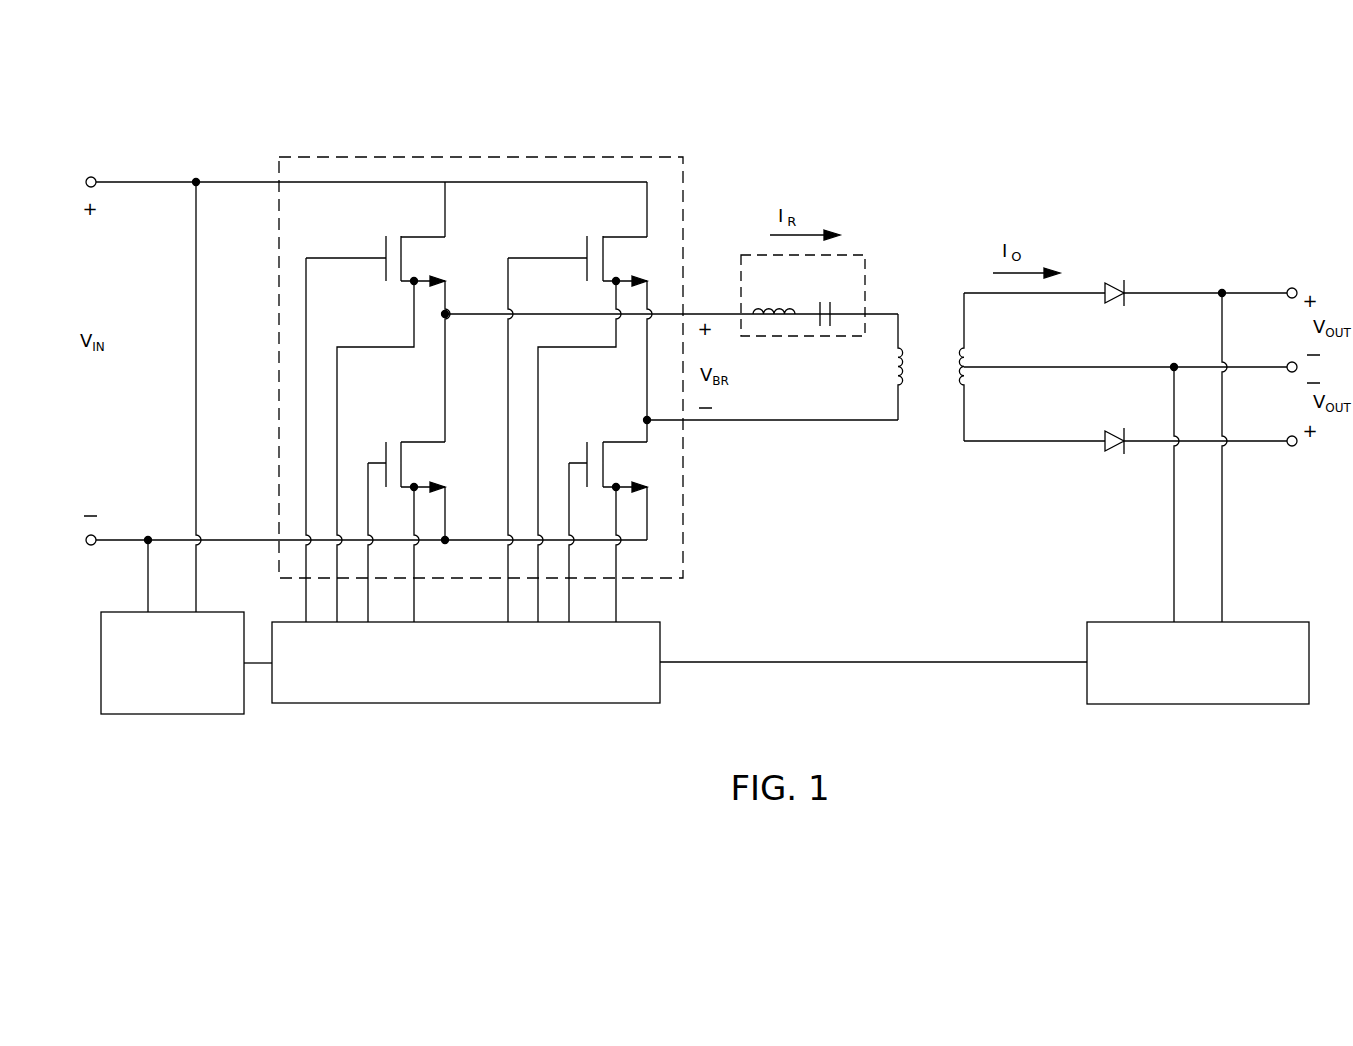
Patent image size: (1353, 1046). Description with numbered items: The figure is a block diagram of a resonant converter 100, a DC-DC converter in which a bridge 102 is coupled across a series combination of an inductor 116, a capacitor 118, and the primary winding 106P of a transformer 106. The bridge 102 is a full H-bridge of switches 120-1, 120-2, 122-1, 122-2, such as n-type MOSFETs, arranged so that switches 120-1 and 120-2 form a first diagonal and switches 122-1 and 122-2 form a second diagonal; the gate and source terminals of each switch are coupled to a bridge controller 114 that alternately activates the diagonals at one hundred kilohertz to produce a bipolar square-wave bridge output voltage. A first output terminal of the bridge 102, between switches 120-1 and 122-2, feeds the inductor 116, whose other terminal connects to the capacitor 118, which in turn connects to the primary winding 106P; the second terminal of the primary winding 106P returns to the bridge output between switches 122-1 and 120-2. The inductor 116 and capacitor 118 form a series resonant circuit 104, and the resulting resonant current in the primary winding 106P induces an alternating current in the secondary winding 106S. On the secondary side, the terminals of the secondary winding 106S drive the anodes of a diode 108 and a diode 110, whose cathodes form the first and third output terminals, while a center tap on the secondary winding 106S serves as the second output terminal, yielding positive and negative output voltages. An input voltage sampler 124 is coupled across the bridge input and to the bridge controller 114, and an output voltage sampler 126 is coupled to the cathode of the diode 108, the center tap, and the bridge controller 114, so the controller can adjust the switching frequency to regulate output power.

The resonant converter 100 is at (1027, 115).
The bridge 102 is at (554, 156).
The series resonant circuit 104 is at (796, 250).
The transformer 106 is at (929, 374).
The primary winding 106P is at (900, 388).
The secondary winding 106S is at (958, 390).
The diode 108 is at (1118, 281).
The diode 110 is at (1117, 453).
The bridge controller 114 is at (306, 705).
The inductor 116 is at (763, 303).
The capacitor 118 is at (831, 303).
The switch 120-1 is at (431, 236).
The switch 120-2 is at (633, 441).
The switch 122-1 is at (633, 236).
The switch 122-2 is at (431, 441).
The input voltage sampler 124 is at (131, 717).
The output voltage sampler 126 is at (1122, 707).